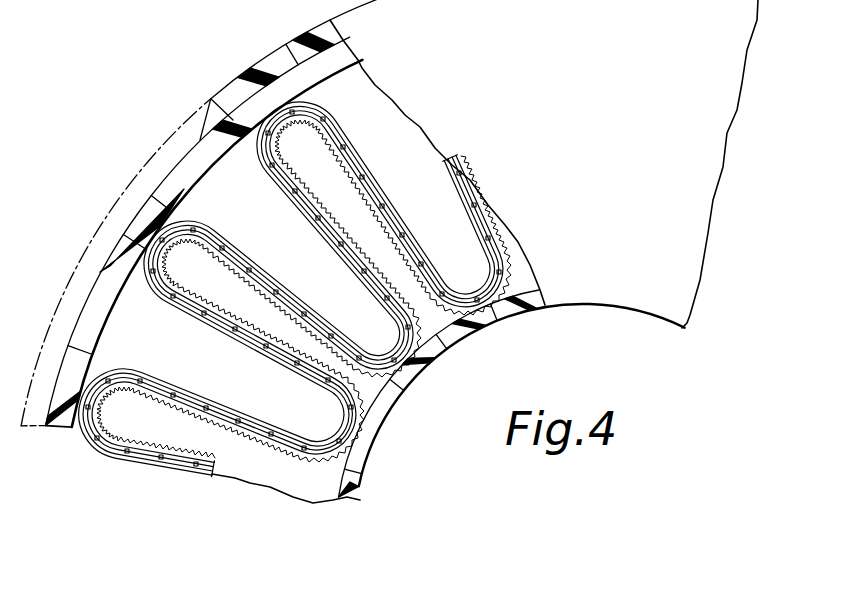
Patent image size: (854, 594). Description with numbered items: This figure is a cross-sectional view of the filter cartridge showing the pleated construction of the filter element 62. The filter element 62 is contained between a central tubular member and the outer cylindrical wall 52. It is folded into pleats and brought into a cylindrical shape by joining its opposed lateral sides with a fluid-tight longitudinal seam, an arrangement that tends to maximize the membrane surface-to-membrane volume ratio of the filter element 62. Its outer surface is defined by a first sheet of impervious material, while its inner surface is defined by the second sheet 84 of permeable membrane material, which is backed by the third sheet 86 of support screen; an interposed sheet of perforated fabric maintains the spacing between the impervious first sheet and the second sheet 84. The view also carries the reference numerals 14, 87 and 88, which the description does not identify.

The stator core inner band 14 is at (414, 372).
The outer cylindrical wall 52 is at (130, 233).
The filter element 62 is at (207, 207).
The second sheet 84 is at (251, 282).
The third sheet 86 is at (214, 254).
The coil insulation layer 87 is at (231, 250).
The coil layer 88 is at (263, 270).